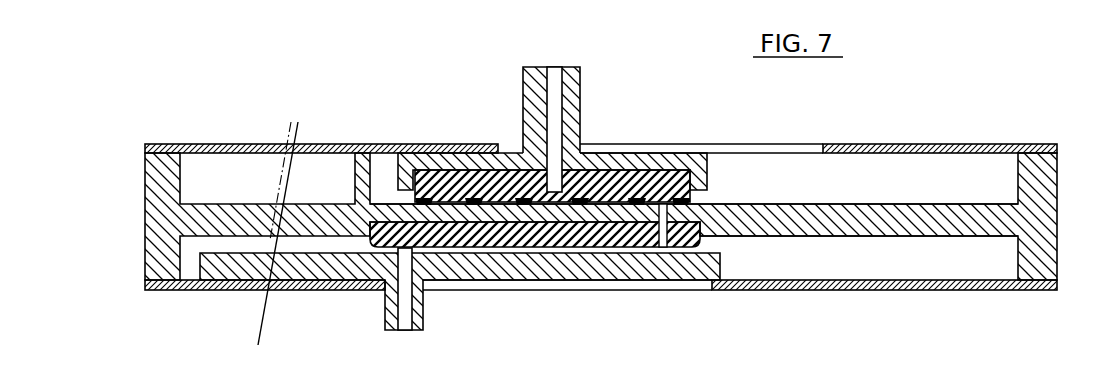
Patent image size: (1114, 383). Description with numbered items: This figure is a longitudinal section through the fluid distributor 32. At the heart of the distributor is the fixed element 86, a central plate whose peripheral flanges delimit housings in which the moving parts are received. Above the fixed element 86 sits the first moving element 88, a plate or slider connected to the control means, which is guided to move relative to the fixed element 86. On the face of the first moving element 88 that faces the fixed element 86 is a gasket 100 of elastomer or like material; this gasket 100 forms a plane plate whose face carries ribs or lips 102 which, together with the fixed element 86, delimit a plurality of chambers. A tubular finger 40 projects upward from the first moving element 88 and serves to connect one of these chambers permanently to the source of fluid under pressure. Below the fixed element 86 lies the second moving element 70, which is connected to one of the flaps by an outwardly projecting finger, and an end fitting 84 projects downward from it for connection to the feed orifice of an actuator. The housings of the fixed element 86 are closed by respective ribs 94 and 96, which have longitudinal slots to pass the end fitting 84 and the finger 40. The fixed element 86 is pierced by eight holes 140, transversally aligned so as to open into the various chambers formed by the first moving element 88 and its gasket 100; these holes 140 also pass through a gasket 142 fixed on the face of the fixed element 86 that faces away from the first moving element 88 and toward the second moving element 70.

The fluid distributor 32 is at (622, 215).
The tubular finger 40 is at (580, 100).
The second moving element 70 is at (553, 258).
The end fitting 84 is at (403, 331).
The fixed element 86 is at (900, 205).
The first moving element 88 is at (641, 155).
The rib 94 is at (880, 291).
The rib 96 is at (392, 144).
The gasket 100 is at (665, 168).
The ribs or lips 102 is at (700, 198).
The holes 140 is at (665, 245).
The gasket 142 is at (383, 246).